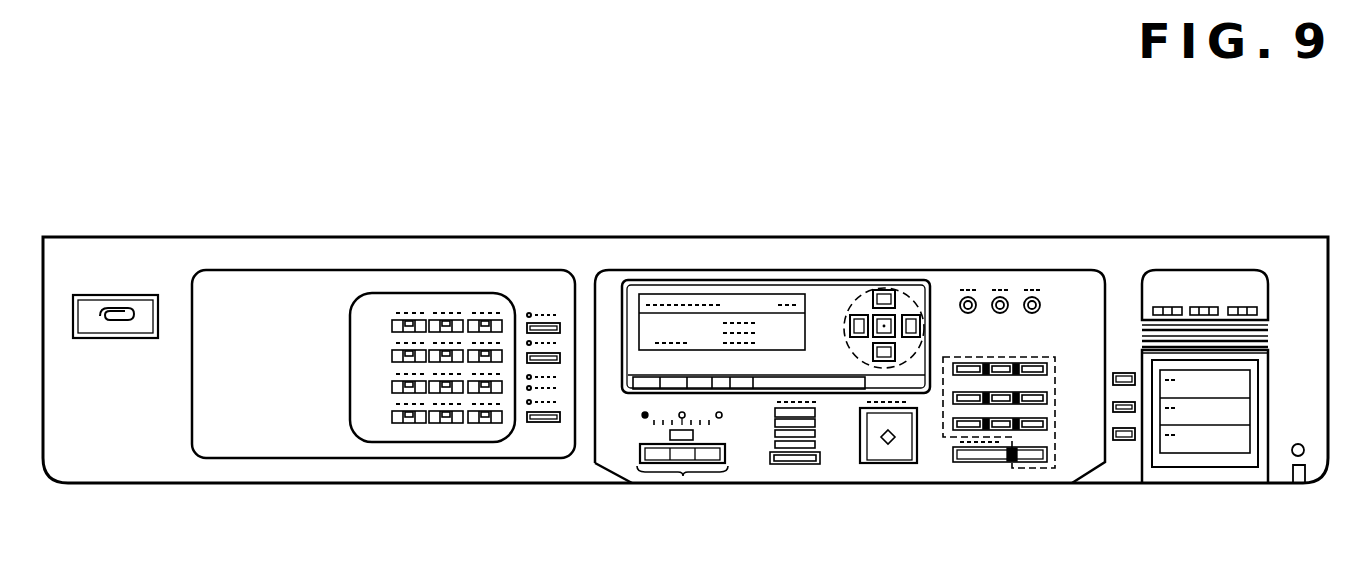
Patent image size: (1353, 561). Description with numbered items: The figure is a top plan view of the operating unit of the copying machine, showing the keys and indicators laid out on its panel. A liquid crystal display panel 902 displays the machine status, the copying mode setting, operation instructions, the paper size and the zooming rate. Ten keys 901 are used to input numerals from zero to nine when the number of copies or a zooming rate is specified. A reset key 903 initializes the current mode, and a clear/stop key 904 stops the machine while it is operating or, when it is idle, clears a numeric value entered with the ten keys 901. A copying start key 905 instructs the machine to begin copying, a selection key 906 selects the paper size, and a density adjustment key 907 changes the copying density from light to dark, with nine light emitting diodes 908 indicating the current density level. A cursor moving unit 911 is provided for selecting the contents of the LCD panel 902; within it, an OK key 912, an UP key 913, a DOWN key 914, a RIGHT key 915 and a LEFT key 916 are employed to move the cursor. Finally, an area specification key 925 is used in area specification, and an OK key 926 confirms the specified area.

The ten keys 901 is at (1018, 448).
The liquid crystal display panel 902 is at (655, 298).
The reset key 903 is at (853, 376).
The clear/stop key 904 is at (1013, 458).
The copying start key 905 is at (900, 463).
The selection key 906 is at (752, 398).
The density adjustment key 907 is at (683, 476).
The light emitting diodes 908 is at (645, 420).
The cursor moving unit 911 is at (890, 290).
The OK key 912 is at (878, 339).
The UP key 913 is at (878, 290).
The DOWN key 914 is at (896, 348).
The RIGHT key 915 is at (902, 315).
The LEFT key 916 is at (850, 314).
The area specification key 925 is at (453, 423).
The OK key 926 is at (561, 357).